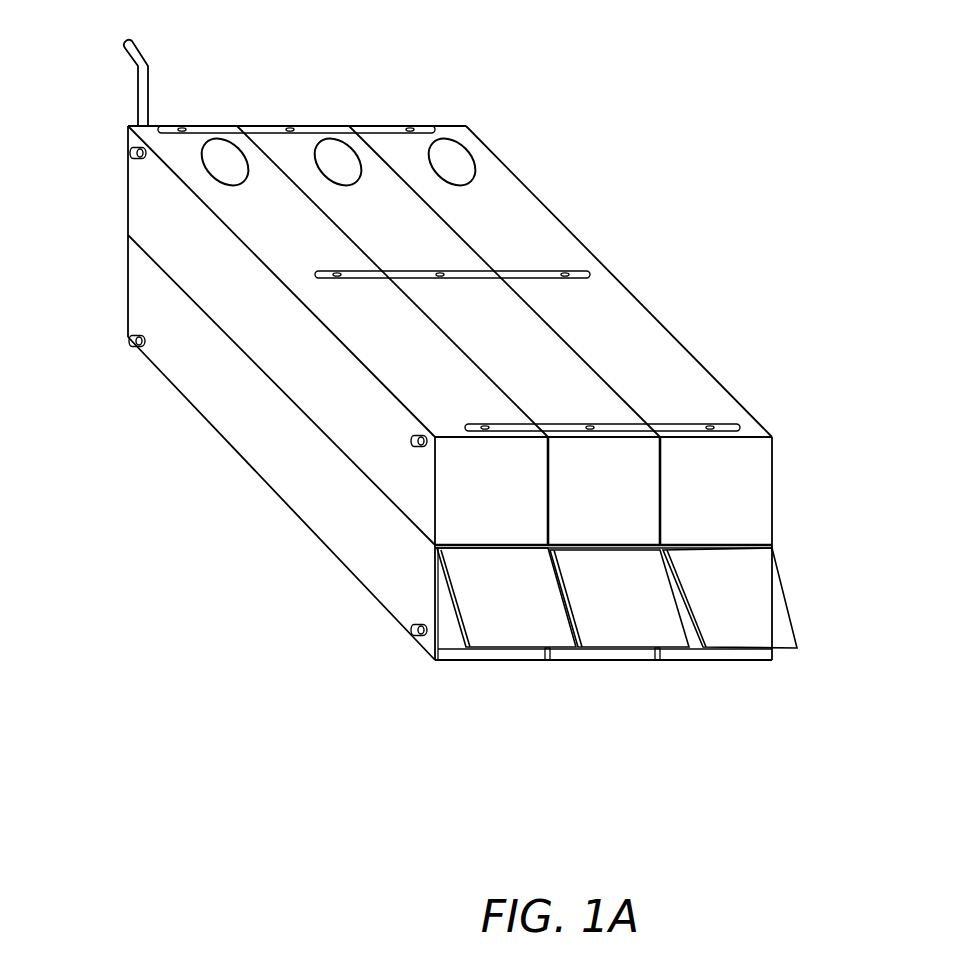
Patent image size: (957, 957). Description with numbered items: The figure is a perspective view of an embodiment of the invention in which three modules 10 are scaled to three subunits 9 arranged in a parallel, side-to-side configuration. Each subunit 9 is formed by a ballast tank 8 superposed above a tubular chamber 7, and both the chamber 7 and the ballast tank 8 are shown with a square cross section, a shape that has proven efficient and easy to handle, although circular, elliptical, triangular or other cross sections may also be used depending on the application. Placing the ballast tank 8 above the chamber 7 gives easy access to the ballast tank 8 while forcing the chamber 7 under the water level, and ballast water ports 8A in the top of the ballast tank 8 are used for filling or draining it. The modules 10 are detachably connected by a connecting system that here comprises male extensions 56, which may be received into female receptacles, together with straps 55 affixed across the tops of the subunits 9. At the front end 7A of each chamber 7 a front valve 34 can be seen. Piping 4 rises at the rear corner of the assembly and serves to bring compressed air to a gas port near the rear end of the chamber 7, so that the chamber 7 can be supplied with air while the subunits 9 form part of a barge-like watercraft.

The piping 4 is at (137, 52).
The chamber 7 is at (245, 437).
The front end 7A is at (702, 653).
The ballast tank 8 is at (148, 213).
The ballast water port 8A is at (448, 163).
The subunit 9 is at (840, 437).
The module 10 is at (166, 121).
The front valve 34 is at (773, 605).
The strap 55 is at (220, 132).
The male extension 56 is at (130, 153).